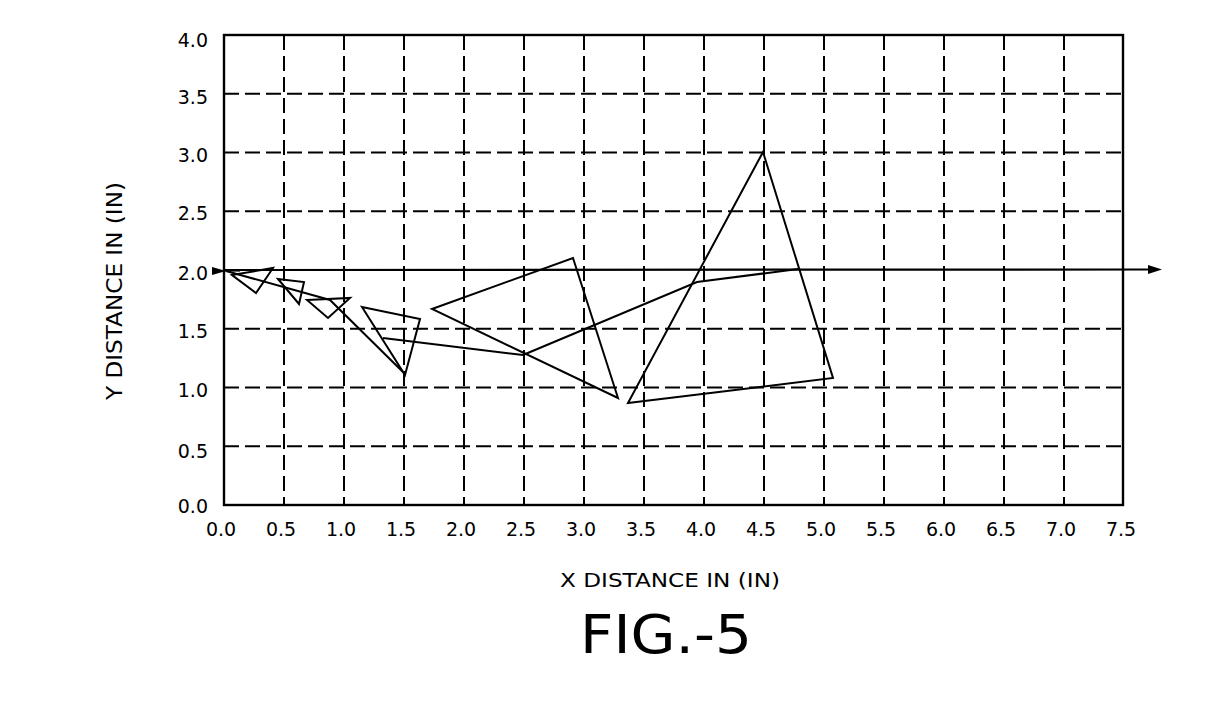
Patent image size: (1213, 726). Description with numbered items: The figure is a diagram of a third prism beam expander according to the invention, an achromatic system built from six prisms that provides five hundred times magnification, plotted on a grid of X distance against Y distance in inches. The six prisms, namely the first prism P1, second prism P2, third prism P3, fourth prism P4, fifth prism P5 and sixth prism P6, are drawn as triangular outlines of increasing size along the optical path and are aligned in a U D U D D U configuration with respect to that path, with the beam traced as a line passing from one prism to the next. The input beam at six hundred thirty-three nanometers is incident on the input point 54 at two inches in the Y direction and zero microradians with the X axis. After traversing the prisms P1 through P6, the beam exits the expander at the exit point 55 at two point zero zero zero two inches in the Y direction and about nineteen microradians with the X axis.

The input point 54 is at (216, 268).
The exit point 55 is at (1131, 268).
The first prism P1 is at (262, 267).
The second prism P2 is at (299, 305).
The third prism P3 is at (329, 296).
The fourth prism P4 is at (392, 355).
The fifth prism P5 is at (561, 372).
The sixth prism P6 is at (716, 238).